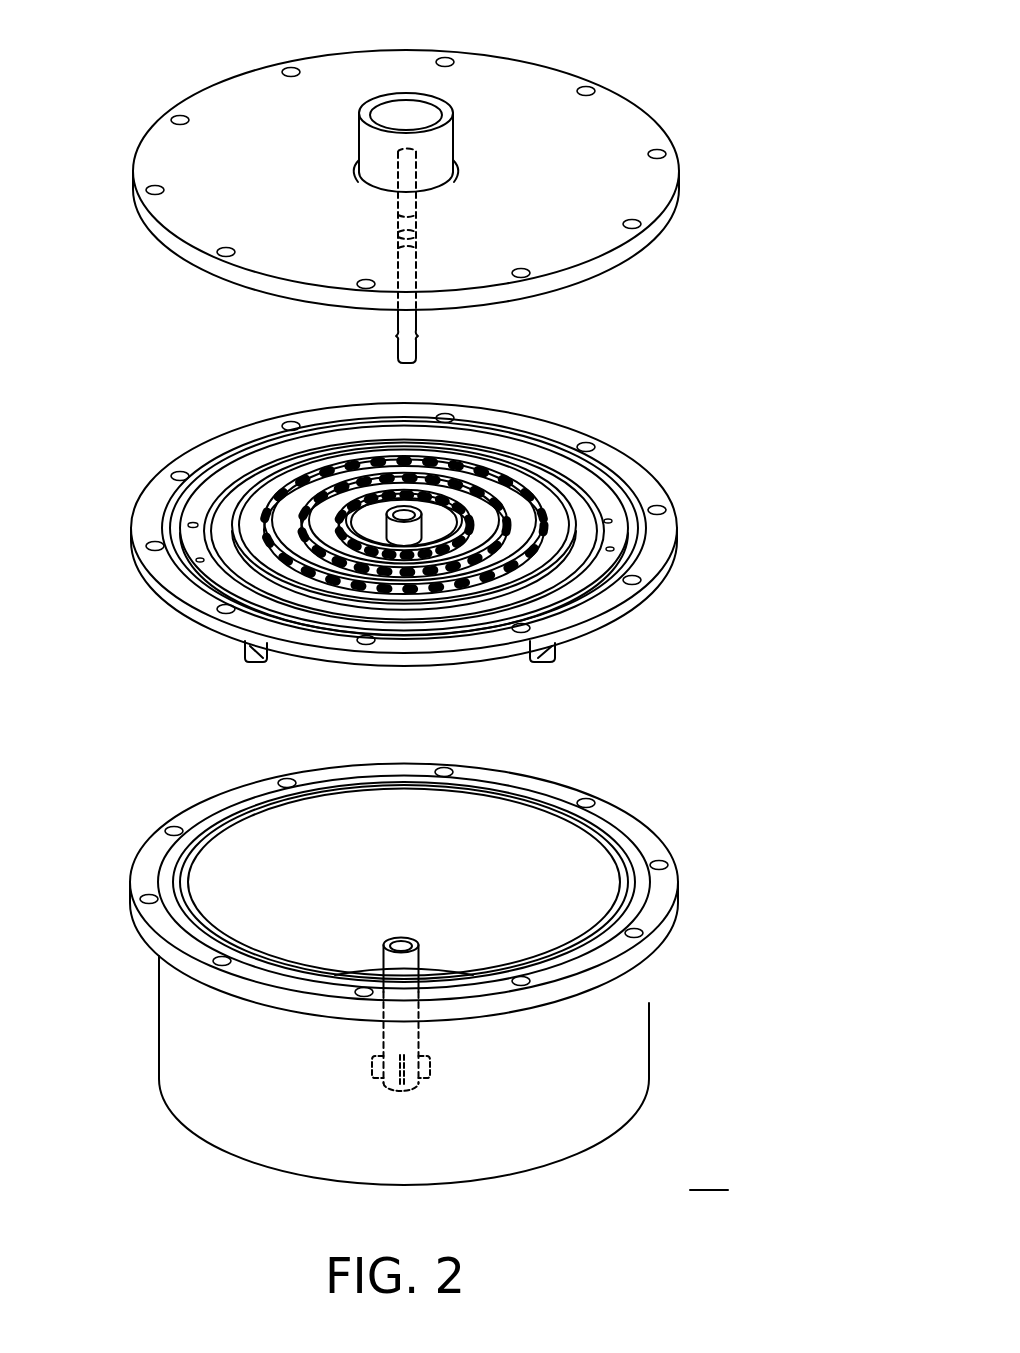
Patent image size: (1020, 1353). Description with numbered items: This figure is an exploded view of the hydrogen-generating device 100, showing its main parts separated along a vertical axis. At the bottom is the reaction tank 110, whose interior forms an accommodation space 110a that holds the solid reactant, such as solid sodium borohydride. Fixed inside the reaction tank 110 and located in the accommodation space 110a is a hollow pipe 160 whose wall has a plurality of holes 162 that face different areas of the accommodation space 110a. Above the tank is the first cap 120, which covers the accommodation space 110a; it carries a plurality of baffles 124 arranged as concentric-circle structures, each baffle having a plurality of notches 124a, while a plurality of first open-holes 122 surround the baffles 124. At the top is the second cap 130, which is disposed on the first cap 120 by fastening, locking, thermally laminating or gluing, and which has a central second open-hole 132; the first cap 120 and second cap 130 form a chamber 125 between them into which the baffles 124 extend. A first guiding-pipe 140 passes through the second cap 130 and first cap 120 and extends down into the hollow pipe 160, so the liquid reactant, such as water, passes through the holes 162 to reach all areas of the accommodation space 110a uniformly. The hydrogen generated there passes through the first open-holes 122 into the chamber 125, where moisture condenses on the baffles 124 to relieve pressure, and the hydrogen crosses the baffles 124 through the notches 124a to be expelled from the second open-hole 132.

The hydrogen-generating device 100 is at (709, 1174).
The reaction tank 110 is at (427, 974).
The accommodation space 110a is at (527, 881).
The first cap 120 is at (450, 511).
The first open-holes 122 is at (193, 525).
The baffles 124 is at (404, 483).
The notches 124a is at (476, 458).
The chamber 125 is at (581, 543).
The second cap 130 is at (454, 155).
The second open-hole 132 is at (403, 118).
The first guiding-pipe 140 is at (398, 346).
The hollow pipe 160 is at (418, 963).
The holes 162 is at (385, 1050).